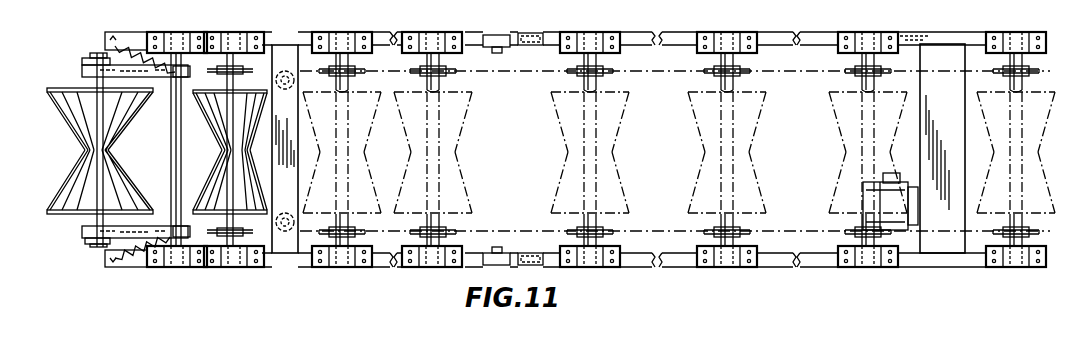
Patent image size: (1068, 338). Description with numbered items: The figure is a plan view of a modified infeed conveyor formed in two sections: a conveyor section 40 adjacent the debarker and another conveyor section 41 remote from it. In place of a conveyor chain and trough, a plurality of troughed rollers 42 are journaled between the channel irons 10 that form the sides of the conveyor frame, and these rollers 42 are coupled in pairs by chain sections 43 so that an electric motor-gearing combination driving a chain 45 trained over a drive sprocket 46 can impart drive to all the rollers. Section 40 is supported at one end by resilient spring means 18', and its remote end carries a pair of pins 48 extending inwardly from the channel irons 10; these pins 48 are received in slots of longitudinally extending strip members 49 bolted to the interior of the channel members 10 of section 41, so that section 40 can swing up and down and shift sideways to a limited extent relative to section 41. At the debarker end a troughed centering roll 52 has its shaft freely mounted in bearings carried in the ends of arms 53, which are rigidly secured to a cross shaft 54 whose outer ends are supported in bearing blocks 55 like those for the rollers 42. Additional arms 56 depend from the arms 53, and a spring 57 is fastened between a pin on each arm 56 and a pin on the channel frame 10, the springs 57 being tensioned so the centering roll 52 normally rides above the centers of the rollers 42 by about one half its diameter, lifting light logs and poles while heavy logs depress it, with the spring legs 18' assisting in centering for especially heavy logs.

The channel irons 10 is at (623, 265).
The resilient spring means 18' is at (285, 149).
The conveyor section 40 is at (411, 30).
The conveyor section 41 is at (676, 30).
The troughed rollers 42 is at (571, 157).
The chain sections 43 is at (328, 72).
The chain 45 is at (997, 232).
The drive sprocket 46 is at (1004, 155).
The pins 48 is at (495, 52).
The strip members 49 is at (530, 46).
The centering roll 52 is at (60, 213).
The arms 53 is at (82, 70).
The cross shaft 54 is at (170, 146).
The bearing blocks 55 is at (175, 259).
The additional arms 56 is at (186, 74).
The spring 57 is at (122, 42).